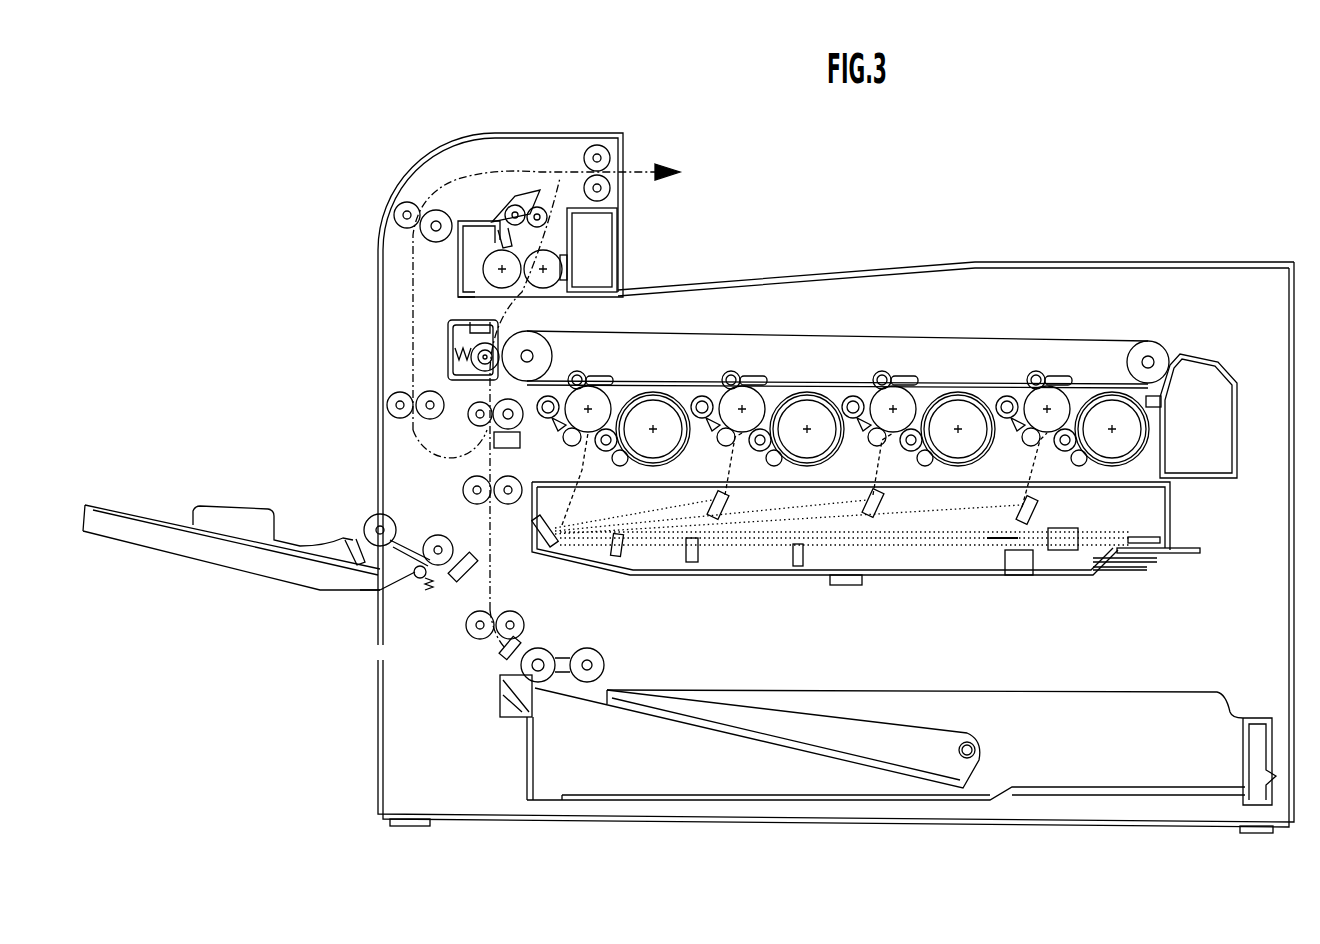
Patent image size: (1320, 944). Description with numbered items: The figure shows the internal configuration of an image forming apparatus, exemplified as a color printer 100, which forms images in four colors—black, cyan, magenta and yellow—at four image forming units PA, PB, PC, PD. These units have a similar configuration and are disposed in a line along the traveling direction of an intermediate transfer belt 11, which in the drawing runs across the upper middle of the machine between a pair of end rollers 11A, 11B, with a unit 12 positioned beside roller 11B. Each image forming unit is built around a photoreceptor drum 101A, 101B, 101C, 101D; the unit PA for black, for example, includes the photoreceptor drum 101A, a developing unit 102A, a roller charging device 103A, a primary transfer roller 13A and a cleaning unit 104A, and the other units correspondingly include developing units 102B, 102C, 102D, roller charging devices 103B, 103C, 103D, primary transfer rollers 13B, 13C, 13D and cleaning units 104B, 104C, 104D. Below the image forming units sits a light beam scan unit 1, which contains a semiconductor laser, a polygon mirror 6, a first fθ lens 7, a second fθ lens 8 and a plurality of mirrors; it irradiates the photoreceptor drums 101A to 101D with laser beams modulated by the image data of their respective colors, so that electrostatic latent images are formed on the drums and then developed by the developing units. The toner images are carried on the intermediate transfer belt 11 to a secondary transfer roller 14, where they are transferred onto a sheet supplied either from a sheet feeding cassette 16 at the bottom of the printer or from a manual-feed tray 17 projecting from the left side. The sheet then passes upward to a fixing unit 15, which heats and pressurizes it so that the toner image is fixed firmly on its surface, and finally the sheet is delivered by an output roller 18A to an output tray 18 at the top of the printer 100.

The color printer 100 is at (1258, 214).
The light beam scan unit 1 is at (901, 525).
The polygon mirror 6 is at (1177, 538).
The first fθ lens 7 is at (1063, 552).
The second fθ lens 8 is at (1012, 557).
The intermediate transfer belt 11 is at (1130, 340).
The drive roller 11A is at (512, 337).
The tension roller 11B is at (1168, 348).
The belt cleaning unit 12 is at (1222, 377).
The primary transfer roller 13A is at (577, 371).
The primary transfer roller 13B is at (728, 371).
The primary transfer roller 13C is at (880, 371).
The primary transfer roller 13D is at (1035, 371).
The secondary transfer roller 14 is at (473, 350).
The fixing unit 15 is at (460, 221).
The sheet feeding cassette 16 is at (1063, 703).
The manual-feed tray 17 is at (148, 512).
The output tray 18 is at (747, 272).
The output roller 18A is at (597, 145).
The photoreceptor drum 101A is at (600, 394).
The photoreceptor drum 101B is at (748, 390).
The photoreceptor drum 101C is at (898, 390).
The photoreceptor drum 101D is at (1052, 390).
The developing unit 102A is at (650, 392).
The developing unit 102B is at (803, 392).
The developing unit 102C is at (958, 392).
The developing unit 102D is at (1112, 392).
The roller charging device 103A is at (588, 472).
The roller charging device 103B is at (707, 454).
The roller charging device 103C is at (861, 454).
The roller charging device 103D is at (1016, 454).
The cleaning unit 104A is at (545, 425).
The cleaning unit 104B is at (701, 393).
The cleaning unit 104C is at (853, 393).
The cleaning unit 104D is at (1007, 393).
The image forming unit PA is at (614, 370).
The image forming unit PB is at (764, 353).
The image forming unit PC is at (917, 354).
The image forming unit PD is at (1072, 353).